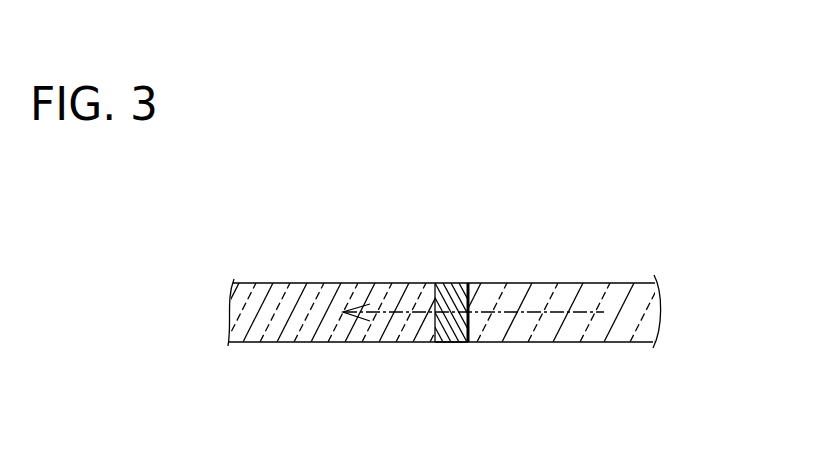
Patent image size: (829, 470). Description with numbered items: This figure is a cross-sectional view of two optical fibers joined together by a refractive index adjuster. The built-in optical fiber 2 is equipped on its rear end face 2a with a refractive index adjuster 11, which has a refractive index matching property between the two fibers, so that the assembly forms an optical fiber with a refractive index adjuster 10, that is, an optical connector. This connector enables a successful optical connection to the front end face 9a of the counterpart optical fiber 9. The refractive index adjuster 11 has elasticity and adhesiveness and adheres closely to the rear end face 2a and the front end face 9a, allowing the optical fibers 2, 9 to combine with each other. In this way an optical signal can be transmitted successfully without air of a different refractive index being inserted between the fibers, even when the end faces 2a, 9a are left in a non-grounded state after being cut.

The optical fiber with a refractive index adjuster 10 is at (291, 282).
The built-in optical fiber 2 is at (331, 290).
The rear end face 2a is at (448, 282).
The refractive index adjuster 11 is at (463, 282).
The counterpart optical fiber 9 is at (570, 343).
The front end face 9a is at (452, 343).